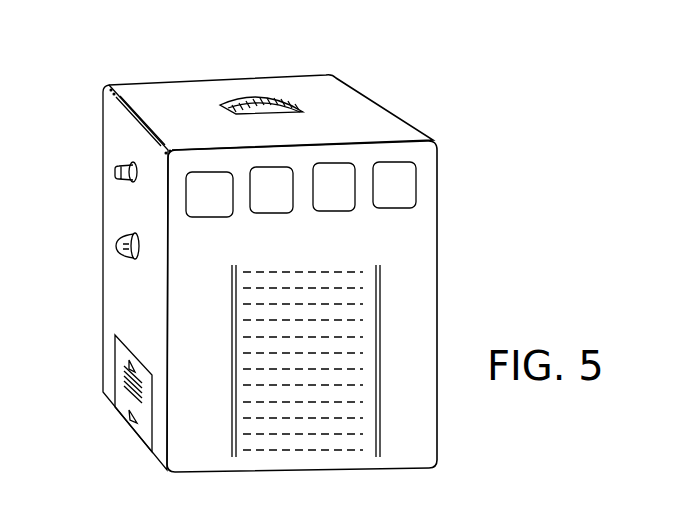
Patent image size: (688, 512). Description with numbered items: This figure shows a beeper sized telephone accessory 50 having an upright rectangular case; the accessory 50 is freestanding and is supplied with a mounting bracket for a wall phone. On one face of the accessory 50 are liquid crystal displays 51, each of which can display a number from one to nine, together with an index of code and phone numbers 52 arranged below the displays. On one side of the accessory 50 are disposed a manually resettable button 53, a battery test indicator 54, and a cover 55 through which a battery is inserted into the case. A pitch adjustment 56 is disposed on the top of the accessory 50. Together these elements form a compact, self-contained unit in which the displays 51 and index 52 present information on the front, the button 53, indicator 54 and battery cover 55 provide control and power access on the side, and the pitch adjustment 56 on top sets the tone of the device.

The telephone accessory 50 is at (369, 50).
The liquid crystal displays 51 is at (217, 209).
The index of code and phone numbers 52 is at (343, 326).
The manually resettable button 53 is at (115, 172).
The battery test indicator 54 is at (116, 248).
The cover 55 is at (122, 407).
The pitch adjustment 56 is at (252, 100).